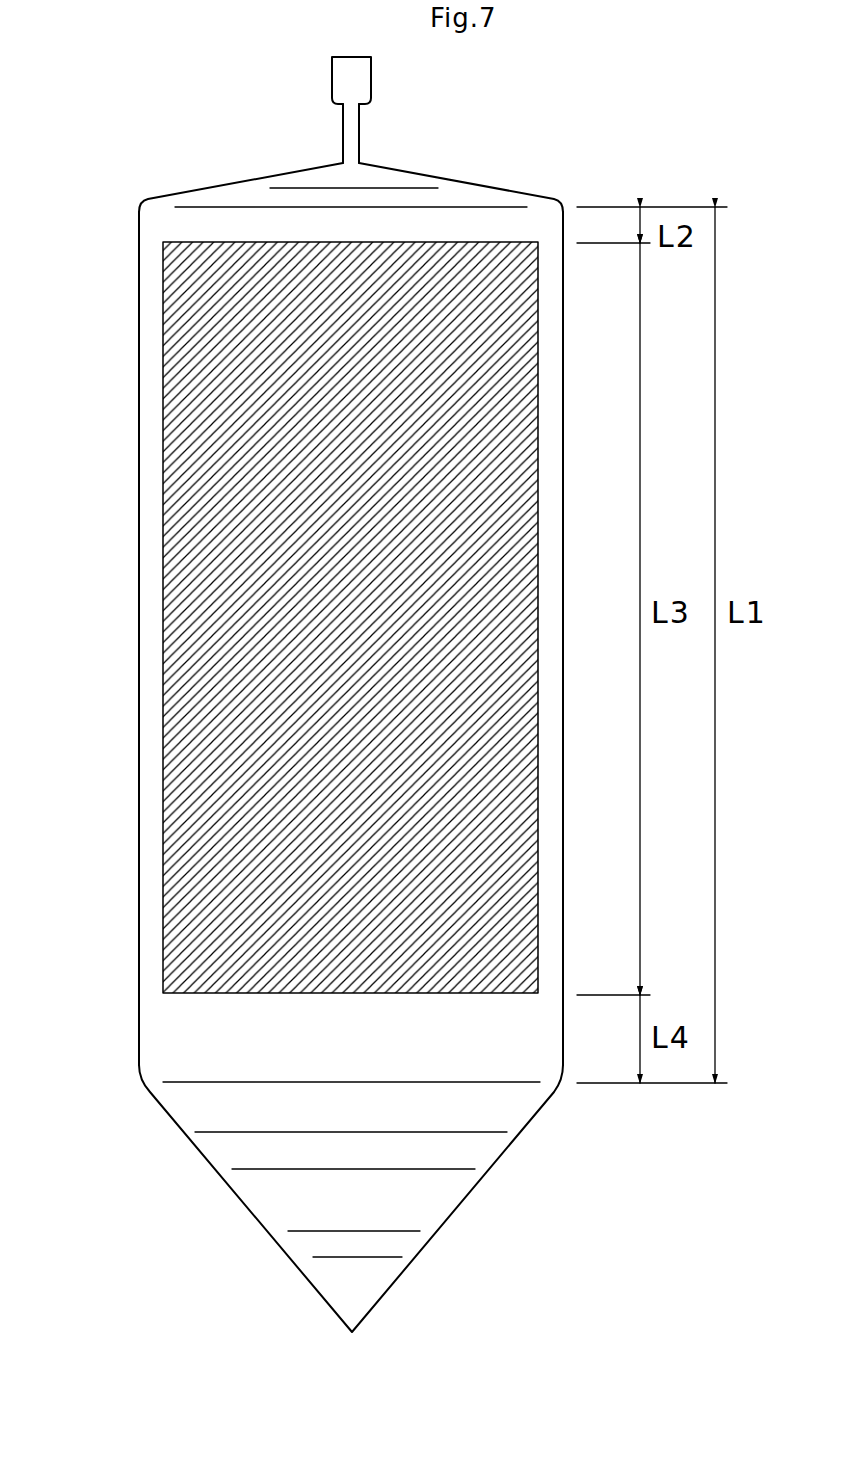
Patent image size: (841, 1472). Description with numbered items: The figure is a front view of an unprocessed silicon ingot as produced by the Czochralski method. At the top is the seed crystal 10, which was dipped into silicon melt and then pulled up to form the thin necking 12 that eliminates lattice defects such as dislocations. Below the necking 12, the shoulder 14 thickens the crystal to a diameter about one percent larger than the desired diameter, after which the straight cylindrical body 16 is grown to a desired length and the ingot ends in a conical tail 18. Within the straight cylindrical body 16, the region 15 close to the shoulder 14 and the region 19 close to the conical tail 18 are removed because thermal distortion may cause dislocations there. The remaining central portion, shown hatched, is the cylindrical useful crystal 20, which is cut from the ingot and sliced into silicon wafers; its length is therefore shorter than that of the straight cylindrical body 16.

The seed crystal 10 is at (332, 76).
The necking 12 is at (343, 132).
The shoulder 14 is at (232, 185).
The region 15 is at (173, 227).
The straight cylindrical body 16 is at (140, 642).
The conical tail 18 is at (238, 1200).
The region 19 is at (183, 1042).
The useful crystal 20 is at (163, 773).